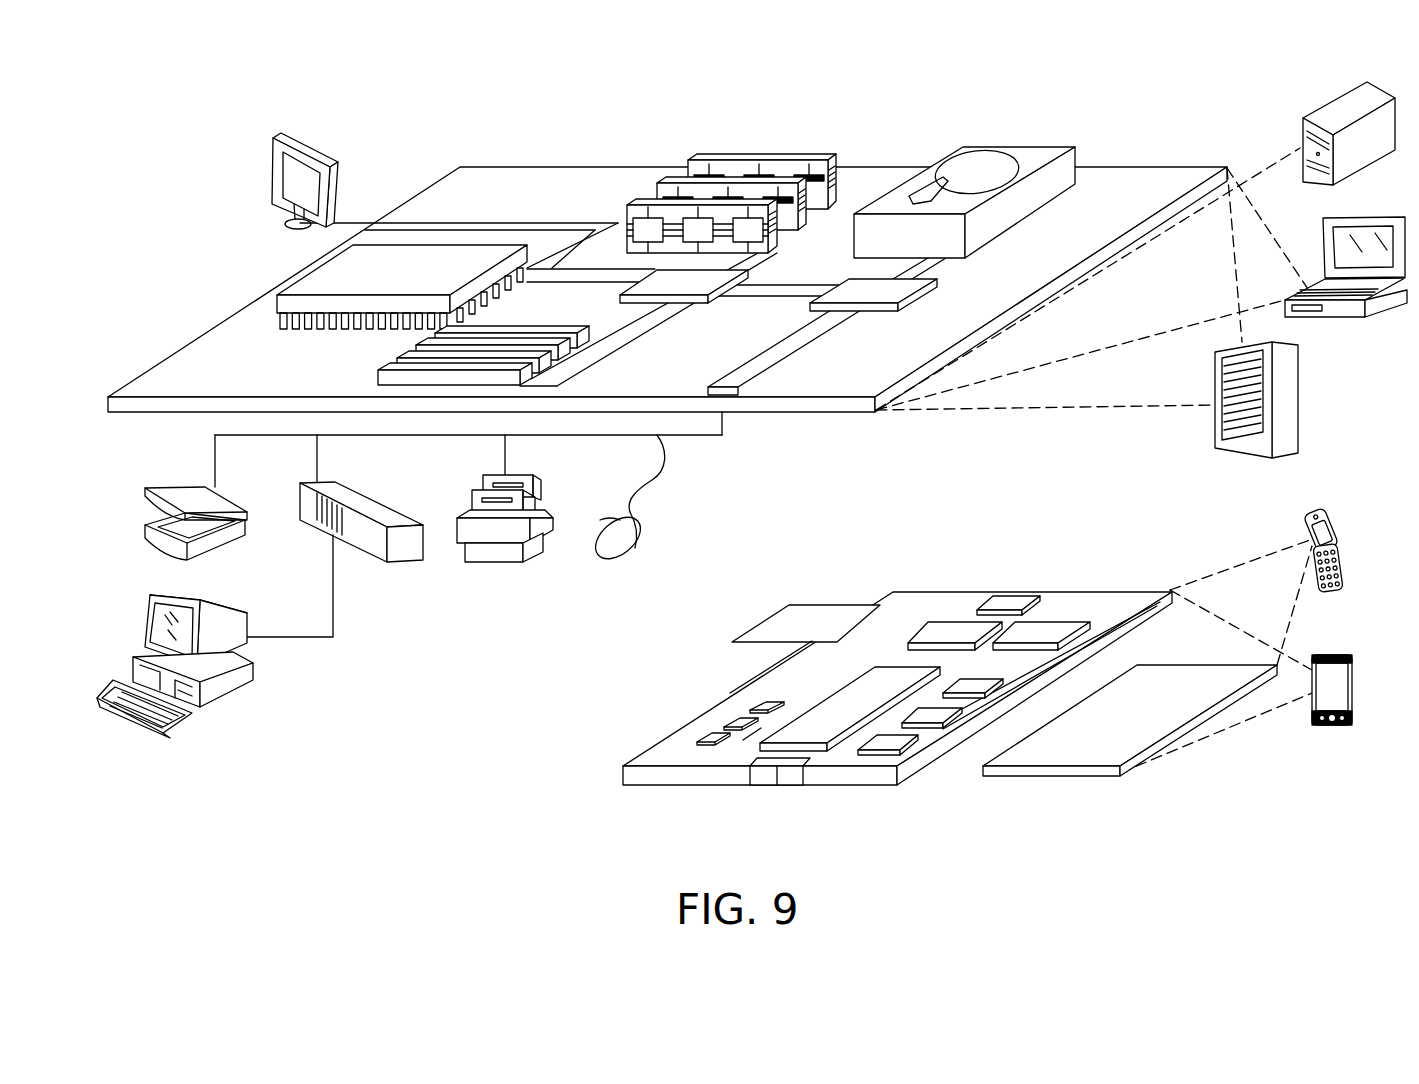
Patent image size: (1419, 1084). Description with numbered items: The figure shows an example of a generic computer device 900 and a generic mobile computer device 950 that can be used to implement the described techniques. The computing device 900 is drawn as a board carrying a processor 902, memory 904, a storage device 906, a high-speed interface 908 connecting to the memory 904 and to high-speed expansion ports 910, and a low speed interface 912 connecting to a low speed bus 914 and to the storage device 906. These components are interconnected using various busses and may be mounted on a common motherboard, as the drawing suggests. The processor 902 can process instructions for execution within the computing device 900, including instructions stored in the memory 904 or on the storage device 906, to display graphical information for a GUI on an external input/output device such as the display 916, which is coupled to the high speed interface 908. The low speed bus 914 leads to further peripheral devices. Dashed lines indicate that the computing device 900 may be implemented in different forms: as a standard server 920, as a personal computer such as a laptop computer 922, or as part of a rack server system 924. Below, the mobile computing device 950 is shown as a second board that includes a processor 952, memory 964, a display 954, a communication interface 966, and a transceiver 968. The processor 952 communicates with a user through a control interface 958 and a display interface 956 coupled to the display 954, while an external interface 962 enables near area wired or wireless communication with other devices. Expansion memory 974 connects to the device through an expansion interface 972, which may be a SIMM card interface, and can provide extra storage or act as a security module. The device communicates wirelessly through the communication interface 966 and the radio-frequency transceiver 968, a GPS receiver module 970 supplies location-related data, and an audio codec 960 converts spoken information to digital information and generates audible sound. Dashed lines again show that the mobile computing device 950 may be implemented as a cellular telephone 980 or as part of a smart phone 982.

The computing device 900 is at (406, 110).
The processor 902 is at (302, 273).
The memory 904 is at (767, 164).
The storage device 906 is at (1007, 143).
The high-speed interface 908 is at (697, 282).
The high-speed expansion ports 910 is at (406, 352).
The low speed interface 912 is at (848, 288).
The low speed bus 914 is at (730, 385).
The display 916 is at (281, 134).
The standard server 920 is at (1321, 110).
The laptop computer 922 is at (1378, 217).
The rack server system 924 is at (1299, 397).
The mobile computing device 950 is at (570, 794).
The processor 952 is at (817, 715).
The display 954 is at (1169, 682).
The display interface 956 is at (898, 740).
The control interface 958 is at (937, 712).
The audio codec 960 is at (978, 683).
The external interface 962 is at (777, 771).
The memory 964 is at (728, 722).
The communication interface 966 is at (953, 622).
The transceiver 968 is at (1049, 620).
The GPS receiver module 970 is at (1008, 600).
The expansion interface 972 is at (876, 604).
The expansion memory 974 is at (788, 604).
The cellular telephone 980 is at (1320, 512).
The smart phone 982 is at (1318, 656).